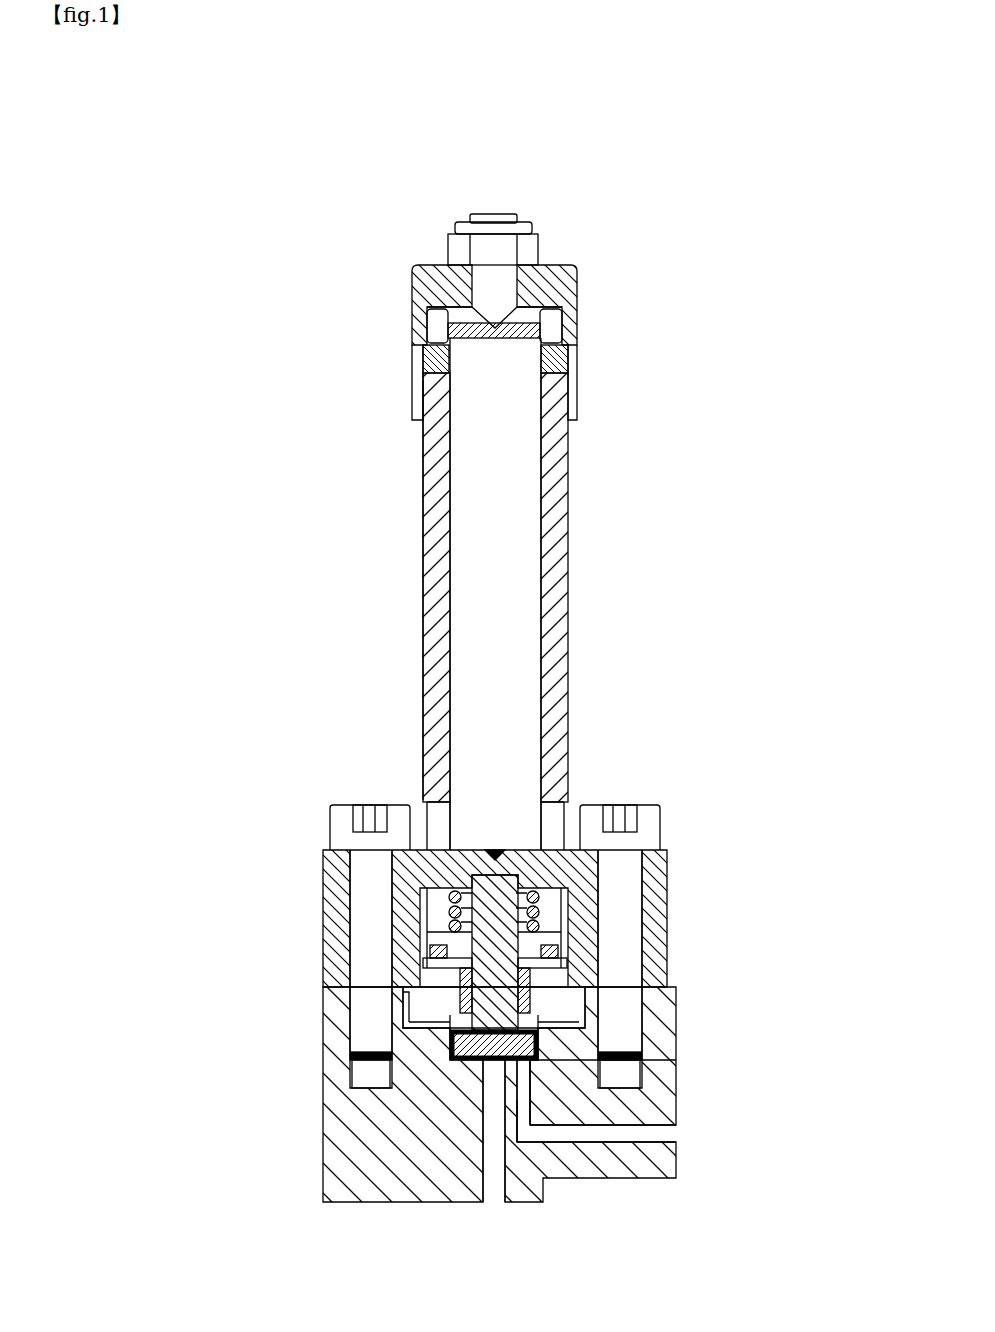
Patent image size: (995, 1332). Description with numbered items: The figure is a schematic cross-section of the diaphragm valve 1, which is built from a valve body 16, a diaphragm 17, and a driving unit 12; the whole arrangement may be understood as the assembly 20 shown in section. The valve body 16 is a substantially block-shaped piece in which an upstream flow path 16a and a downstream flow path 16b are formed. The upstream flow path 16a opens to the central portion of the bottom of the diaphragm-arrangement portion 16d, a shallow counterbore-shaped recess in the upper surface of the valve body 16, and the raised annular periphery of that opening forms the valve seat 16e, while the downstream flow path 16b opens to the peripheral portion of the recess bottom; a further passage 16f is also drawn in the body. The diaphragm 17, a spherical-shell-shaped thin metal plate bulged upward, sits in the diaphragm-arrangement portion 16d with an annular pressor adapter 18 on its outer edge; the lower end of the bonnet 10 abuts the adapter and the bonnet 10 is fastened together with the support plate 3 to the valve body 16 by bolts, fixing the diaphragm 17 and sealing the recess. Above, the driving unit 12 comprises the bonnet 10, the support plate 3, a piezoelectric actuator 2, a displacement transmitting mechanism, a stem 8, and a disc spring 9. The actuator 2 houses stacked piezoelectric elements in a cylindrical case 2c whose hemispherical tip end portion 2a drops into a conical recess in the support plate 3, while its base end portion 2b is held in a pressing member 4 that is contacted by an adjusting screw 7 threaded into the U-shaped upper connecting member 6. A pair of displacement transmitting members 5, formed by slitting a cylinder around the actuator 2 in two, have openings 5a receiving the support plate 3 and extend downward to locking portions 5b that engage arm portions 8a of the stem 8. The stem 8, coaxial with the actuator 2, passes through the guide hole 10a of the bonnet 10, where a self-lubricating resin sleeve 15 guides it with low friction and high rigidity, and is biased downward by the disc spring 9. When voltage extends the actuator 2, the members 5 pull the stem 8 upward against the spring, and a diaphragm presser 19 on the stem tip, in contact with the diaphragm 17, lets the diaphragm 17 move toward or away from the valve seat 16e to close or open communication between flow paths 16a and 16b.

The diaphragm valve 1 is at (323, 382).
The piezoelectric actuator 2 is at (512, 502).
The tip end portion 2a is at (497, 845).
The base end portion 2b is at (575, 362).
The case 2c is at (510, 638).
The support plate 3 is at (323, 872).
The pressing member 4 is at (548, 338).
The displacement transmitting members 5 is at (430, 553).
The openings 5a is at (427, 810).
The locking portion 5b is at (445, 955).
The upper connecting member 6 is at (412, 276).
The adjusting screw 7 is at (493, 283).
The stem 8 is at (470, 963).
The arm portions 8a is at (452, 928).
The disc spring 9 is at (598, 898).
The bonnet 10 is at (340, 965).
The guide hole 10a is at (450, 1038).
The driving unit 12 is at (423, 497).
The sleeve 15 is at (397, 985).
The valve body 16 is at (340, 1170).
The upstream flow path 16a is at (495, 1178).
The downstream flow path 16b is at (597, 1130).
The diaphragm-arrangement portion 16d is at (533, 1142).
The valve seat 16e is at (567, 1184).
The outlet passage 16f is at (560, 1140).
The diaphragm 17 is at (463, 1052).
The pressor adapter 18 is at (453, 1055).
The diaphragm presser 19 is at (610, 1055).
The fluid control device 20 is at (683, 288).